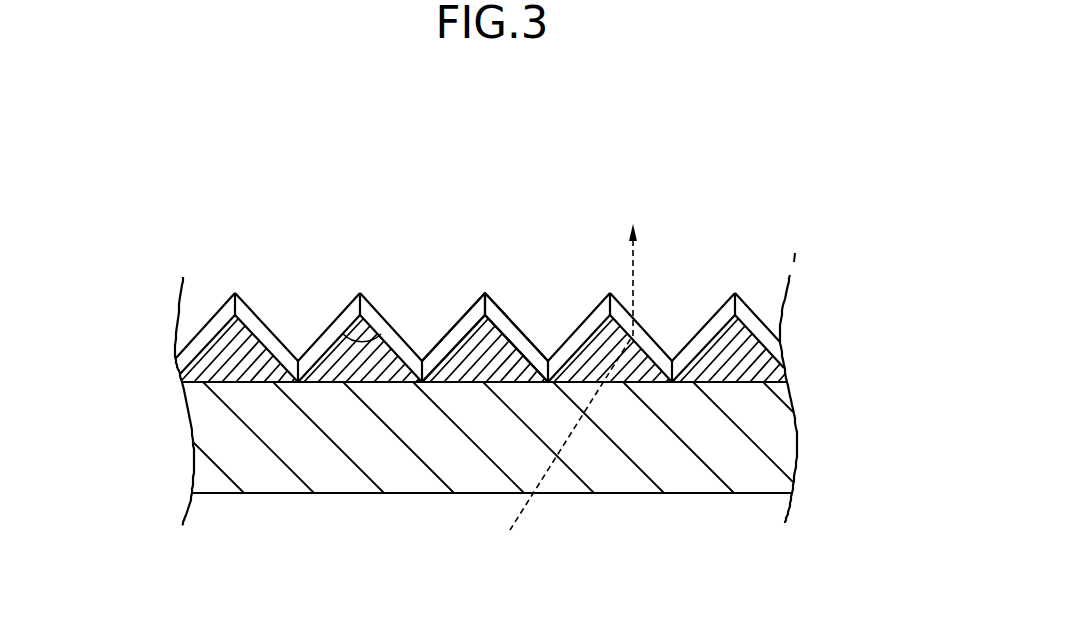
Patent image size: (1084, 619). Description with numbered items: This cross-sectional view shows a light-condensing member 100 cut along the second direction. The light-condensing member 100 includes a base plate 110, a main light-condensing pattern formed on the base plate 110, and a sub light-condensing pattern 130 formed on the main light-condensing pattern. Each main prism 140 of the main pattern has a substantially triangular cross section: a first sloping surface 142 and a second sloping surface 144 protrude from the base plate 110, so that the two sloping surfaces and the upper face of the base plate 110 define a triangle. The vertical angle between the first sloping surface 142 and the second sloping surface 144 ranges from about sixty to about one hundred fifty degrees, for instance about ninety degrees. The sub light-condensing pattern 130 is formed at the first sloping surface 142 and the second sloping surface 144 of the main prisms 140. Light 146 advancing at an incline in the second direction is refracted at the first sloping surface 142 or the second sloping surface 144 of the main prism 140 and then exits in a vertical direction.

The light-condensing member 100 is at (440, 155).
The base plate 110 is at (756, 433).
The sub light-condensing pattern 130 is at (347, 309).
The main prism 140 is at (756, 362).
The first sloping surface 142 is at (465, 325).
The second sloping surface 144 is at (505, 325).
The light 146 is at (633, 251).